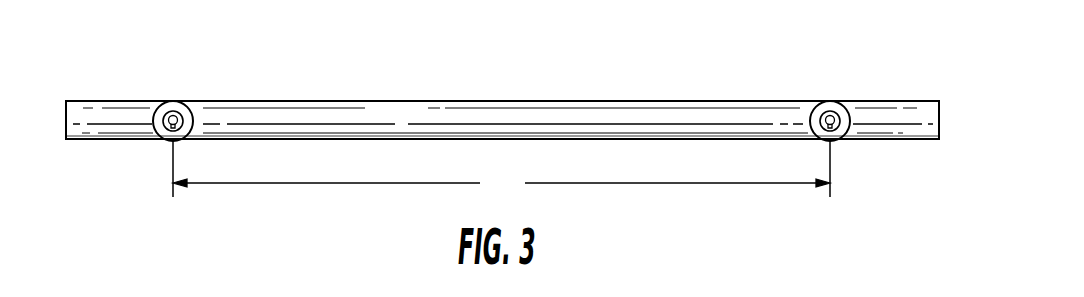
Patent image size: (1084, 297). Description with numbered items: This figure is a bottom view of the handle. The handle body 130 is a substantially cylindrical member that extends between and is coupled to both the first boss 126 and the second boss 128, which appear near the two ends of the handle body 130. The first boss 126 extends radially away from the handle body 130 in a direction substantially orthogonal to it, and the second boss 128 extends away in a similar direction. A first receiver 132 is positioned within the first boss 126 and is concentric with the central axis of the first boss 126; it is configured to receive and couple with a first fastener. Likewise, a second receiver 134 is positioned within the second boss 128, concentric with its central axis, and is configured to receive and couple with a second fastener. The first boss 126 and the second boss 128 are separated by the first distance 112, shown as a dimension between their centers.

The handle body 130 is at (467, 97).
The second receiver 134 is at (166, 106).
The second boss 128 is at (151, 128).
The first receiver 132 is at (822, 105).
The first boss 126 is at (808, 125).
The first distance 112 is at (501, 171).